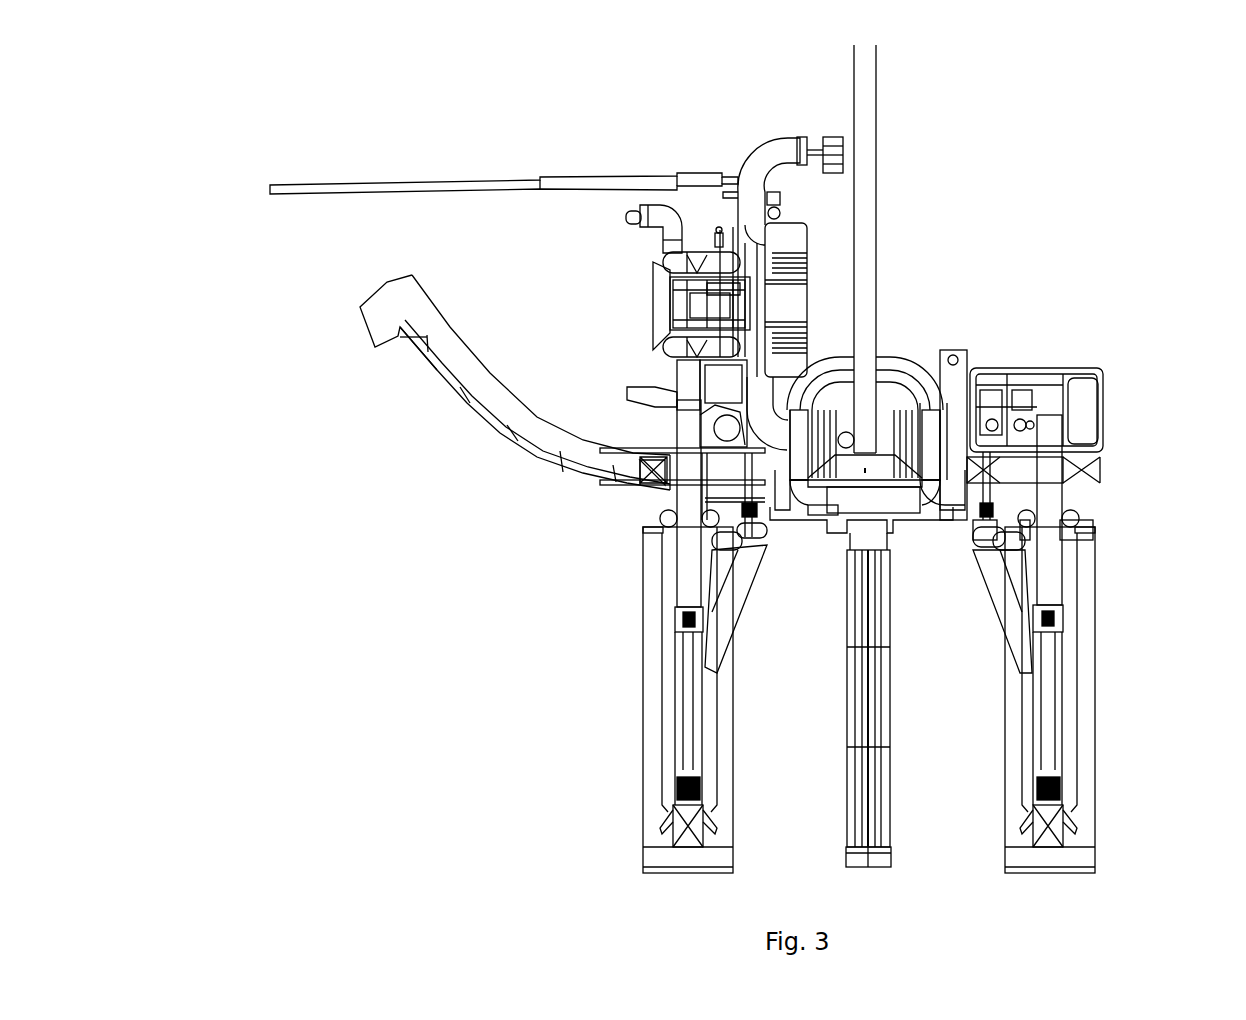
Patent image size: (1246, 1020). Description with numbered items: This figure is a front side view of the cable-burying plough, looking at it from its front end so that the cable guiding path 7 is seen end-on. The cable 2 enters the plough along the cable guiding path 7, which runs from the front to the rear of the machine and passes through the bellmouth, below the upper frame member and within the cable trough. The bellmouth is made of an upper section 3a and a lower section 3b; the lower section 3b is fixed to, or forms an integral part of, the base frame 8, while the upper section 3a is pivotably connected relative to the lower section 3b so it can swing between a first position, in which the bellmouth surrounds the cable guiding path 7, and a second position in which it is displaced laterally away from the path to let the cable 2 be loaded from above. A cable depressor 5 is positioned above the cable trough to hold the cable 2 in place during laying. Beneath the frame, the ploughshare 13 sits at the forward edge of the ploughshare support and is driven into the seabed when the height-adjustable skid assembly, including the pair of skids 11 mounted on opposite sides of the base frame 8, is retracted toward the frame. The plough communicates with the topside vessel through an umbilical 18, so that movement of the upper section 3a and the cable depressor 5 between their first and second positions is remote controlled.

The cable 2 is at (872, 268).
The upper section 3a is at (760, 240).
The lower section 3b is at (880, 492).
The cable depressor 5 is at (510, 427).
The cable guiding path 7 is at (866, 456).
The base frame 8 is at (760, 148).
The skids 11 is at (1070, 710).
The ploughshare 13 is at (873, 803).
The umbilical 18 is at (327, 187).